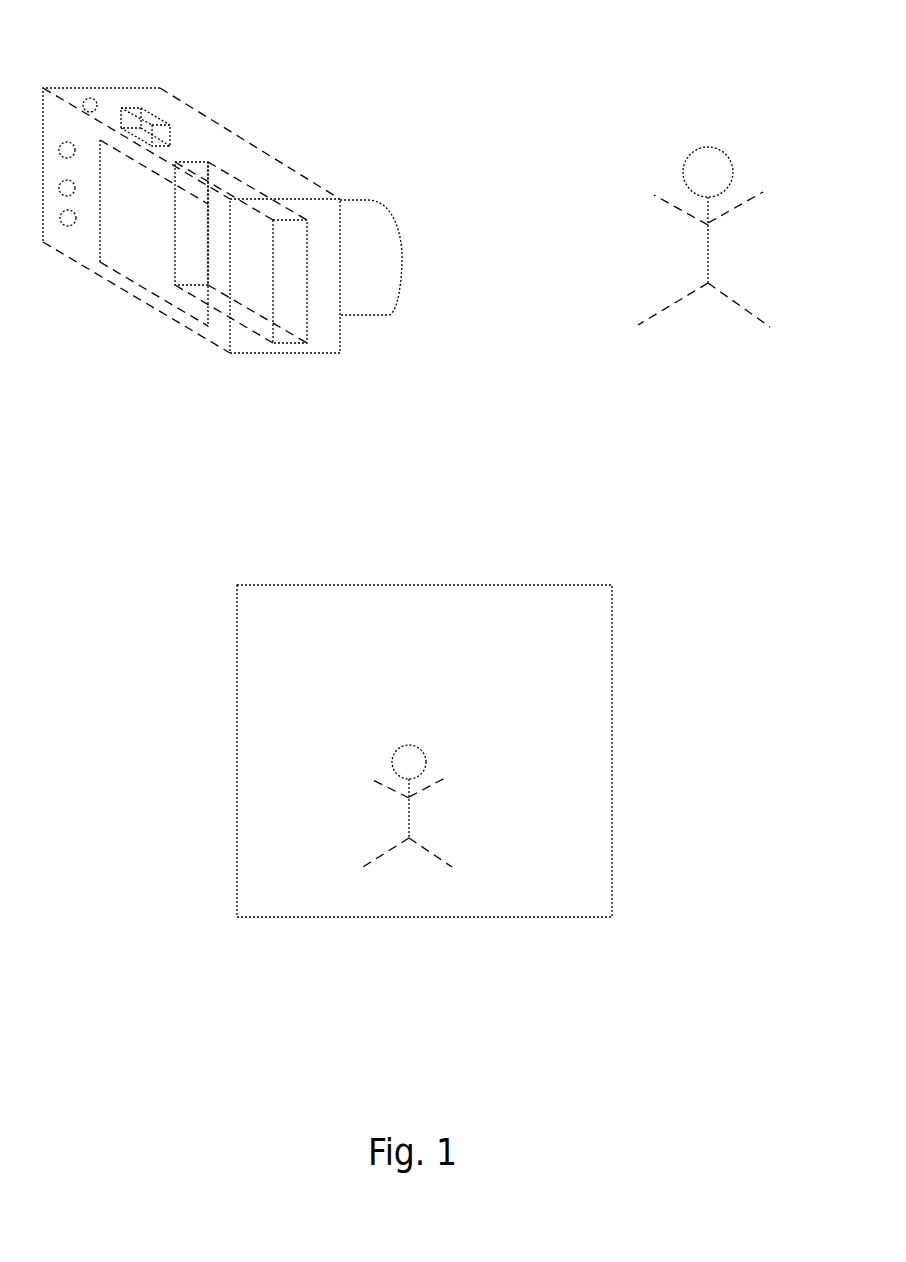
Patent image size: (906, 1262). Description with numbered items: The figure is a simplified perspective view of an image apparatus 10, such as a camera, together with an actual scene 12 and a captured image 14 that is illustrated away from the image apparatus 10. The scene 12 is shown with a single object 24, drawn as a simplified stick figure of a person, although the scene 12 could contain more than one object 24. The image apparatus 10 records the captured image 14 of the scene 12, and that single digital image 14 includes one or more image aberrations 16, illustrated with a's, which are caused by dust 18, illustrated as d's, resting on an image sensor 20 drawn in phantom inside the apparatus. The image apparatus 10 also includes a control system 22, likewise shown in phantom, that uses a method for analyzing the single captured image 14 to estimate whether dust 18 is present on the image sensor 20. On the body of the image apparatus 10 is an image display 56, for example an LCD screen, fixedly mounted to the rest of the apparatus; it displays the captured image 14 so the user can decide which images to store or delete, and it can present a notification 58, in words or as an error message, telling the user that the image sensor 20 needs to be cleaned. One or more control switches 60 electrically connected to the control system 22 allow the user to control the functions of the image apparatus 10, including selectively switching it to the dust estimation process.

The image apparatus 10 is at (218, 219).
The actual scene 12 is at (621, 237).
The captured image 14 is at (424, 751).
The image aberrations 16 is at (420, 692).
The dust 18 is at (280, 303).
The image sensor 20 is at (256, 199).
The control system 22 is at (218, 185).
The object 24 is at (570, 213).
The image display 56 is at (153, 262).
The notification 58 is at (130, 275).
The control switches 60 is at (66, 225).